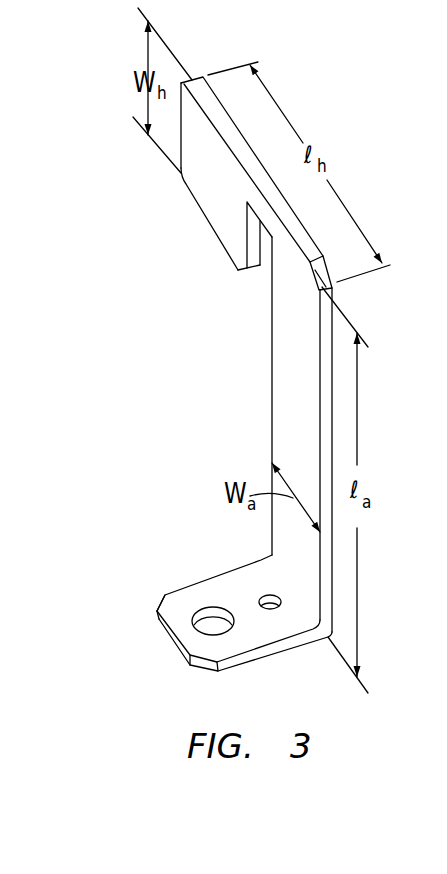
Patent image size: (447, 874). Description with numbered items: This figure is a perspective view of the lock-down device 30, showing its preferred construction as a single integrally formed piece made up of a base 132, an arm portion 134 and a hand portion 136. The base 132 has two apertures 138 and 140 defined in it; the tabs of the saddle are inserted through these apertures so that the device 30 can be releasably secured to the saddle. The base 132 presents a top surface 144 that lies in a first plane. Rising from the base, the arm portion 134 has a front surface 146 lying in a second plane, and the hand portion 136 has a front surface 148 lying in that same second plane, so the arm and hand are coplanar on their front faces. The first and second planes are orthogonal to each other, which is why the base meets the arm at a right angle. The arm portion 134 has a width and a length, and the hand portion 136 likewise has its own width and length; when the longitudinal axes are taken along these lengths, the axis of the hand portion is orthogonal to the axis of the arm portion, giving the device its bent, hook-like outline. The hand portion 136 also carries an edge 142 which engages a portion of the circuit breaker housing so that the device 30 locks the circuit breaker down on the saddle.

The lock-down device 30 is at (185, 387).
The base 132 is at (247, 633).
The arm portion 134 is at (298, 402).
The hand portion 136 is at (222, 214).
The aperture 138 is at (203, 624).
The aperture 140 is at (268, 597).
The edge 142 is at (225, 255).
The top surface 144 is at (175, 607).
The front surface 146 is at (285, 338).
The front surface 148 is at (209, 187).